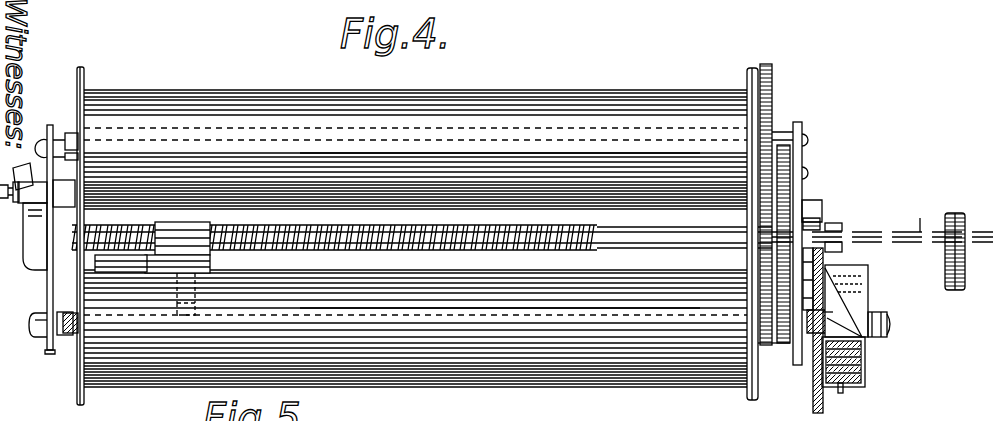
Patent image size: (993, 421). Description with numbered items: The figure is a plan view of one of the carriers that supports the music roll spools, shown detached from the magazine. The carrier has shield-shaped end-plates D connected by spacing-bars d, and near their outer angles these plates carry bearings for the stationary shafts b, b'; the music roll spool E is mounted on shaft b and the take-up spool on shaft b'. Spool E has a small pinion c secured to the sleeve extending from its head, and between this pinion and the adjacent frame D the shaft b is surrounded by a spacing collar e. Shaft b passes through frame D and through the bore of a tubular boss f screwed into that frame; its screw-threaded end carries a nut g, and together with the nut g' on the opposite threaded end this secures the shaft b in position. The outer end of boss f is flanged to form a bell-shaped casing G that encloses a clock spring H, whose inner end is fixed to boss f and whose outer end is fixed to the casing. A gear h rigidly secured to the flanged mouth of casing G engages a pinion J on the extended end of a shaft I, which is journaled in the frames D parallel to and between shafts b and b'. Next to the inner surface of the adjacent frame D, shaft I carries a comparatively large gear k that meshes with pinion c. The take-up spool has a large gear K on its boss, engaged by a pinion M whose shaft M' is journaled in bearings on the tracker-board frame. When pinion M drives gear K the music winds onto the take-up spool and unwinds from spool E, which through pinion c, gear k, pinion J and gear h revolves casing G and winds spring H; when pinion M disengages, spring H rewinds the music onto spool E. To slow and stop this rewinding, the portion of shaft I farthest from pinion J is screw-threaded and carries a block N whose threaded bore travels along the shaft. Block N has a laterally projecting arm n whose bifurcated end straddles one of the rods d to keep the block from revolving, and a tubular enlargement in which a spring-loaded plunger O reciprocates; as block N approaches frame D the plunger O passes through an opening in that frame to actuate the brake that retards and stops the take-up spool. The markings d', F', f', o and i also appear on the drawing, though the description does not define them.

The gear K is at (830, 106).
The gear k is at (792, 206).
The stationary shaft b' is at (832, 181).
The end-plate D is at (812, 187).
The pinion J is at (880, 210).
The pinion M is at (920, 228).
The shaft M' is at (913, 219).
The gear h is at (832, 278).
The stationary shaft b is at (865, 296).
The tubular boss f is at (835, 308).
The nut g is at (897, 321).
The bell-shaped casing G is at (905, 375).
The clock spring H is at (905, 404).
The pinion c is at (780, 347).
The spacing collar e is at (806, 350).
The shaft I is at (710, 270).
The spool E is at (560, 420).
The spacing-bar d is at (500, 148).
The lower drum surface d' is at (500, 316).
The upper drum F' is at (415, 149).
The block N is at (200, 150).
The arm n is at (197, 314).
The plunger O is at (90, 262).
The bracket f' is at (56, 217).
The lever o is at (27, 247).
The nut g' is at (39, 325).
The pin i is at (45, 327).